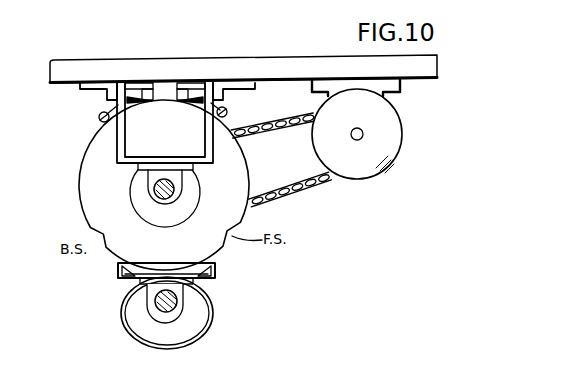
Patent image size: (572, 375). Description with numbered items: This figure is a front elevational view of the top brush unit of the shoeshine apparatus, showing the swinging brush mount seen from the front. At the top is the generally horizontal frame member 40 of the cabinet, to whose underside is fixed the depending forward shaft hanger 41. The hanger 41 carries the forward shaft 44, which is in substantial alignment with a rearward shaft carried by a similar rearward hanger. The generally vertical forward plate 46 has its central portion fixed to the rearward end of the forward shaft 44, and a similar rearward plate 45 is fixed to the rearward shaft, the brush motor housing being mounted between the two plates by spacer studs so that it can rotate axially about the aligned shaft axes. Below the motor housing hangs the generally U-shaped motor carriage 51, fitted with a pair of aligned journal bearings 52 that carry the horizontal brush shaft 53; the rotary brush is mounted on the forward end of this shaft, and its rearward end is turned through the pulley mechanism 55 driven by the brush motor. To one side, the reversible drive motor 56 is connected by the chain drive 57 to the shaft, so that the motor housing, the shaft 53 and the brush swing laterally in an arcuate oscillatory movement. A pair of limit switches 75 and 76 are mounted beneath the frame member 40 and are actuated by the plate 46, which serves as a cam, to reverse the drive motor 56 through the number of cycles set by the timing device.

The frame member 40 is at (68, 70).
The forward shaft hanger 41 is at (208, 130).
The forward shaft 44 is at (153, 191).
The rearward plate 45 is at (4, 294).
The forward plate 46 is at (100, 158).
The motor carriage 51 is at (215, 268).
The journal bearings 52 is at (178, 291).
The brush shaft 53 is at (155, 301).
The pulley mechanism 55 is at (188, 329).
The drive motor 56 is at (393, 141).
The chain drive 57 is at (315, 181).
The limit switch 75 is at (110, 94).
The limit switch 76 is at (220, 93).